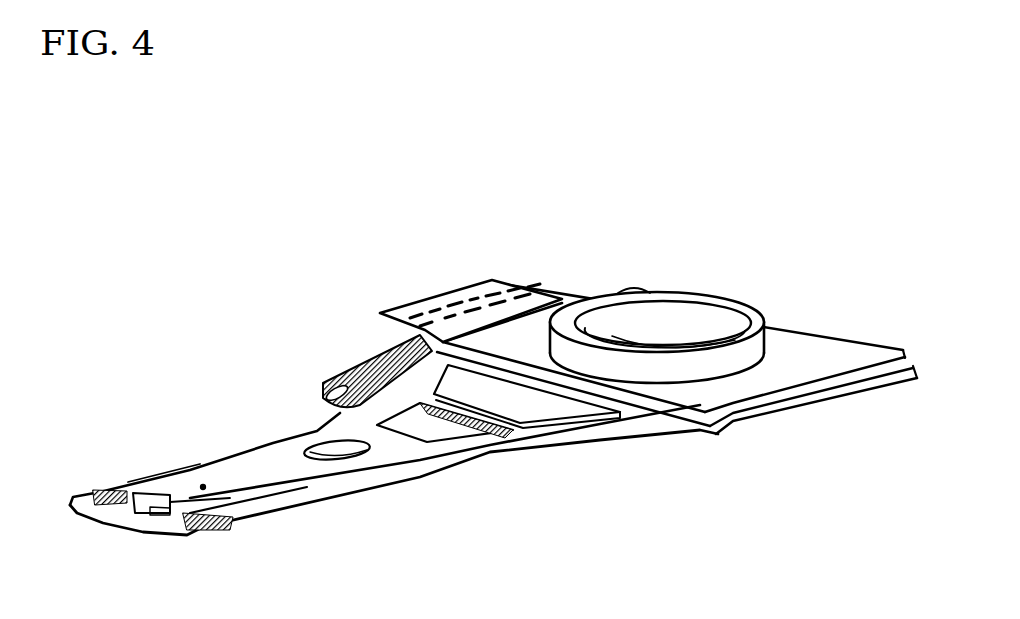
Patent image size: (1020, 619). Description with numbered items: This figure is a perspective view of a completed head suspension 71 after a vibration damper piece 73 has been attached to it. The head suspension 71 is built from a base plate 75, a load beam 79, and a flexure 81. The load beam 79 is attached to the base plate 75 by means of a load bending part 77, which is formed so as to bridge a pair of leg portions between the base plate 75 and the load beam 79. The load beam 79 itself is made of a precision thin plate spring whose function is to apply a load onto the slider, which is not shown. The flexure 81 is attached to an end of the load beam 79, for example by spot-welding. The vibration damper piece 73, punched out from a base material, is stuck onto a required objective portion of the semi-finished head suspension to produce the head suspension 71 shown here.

The head suspension 71 is at (634, 190).
The vibration damper piece 73 is at (567, 415).
The base plate 75 is at (843, 347).
The load bending part 77 is at (428, 372).
The load beam 79 is at (490, 448).
The flexure 81 is at (96, 490).